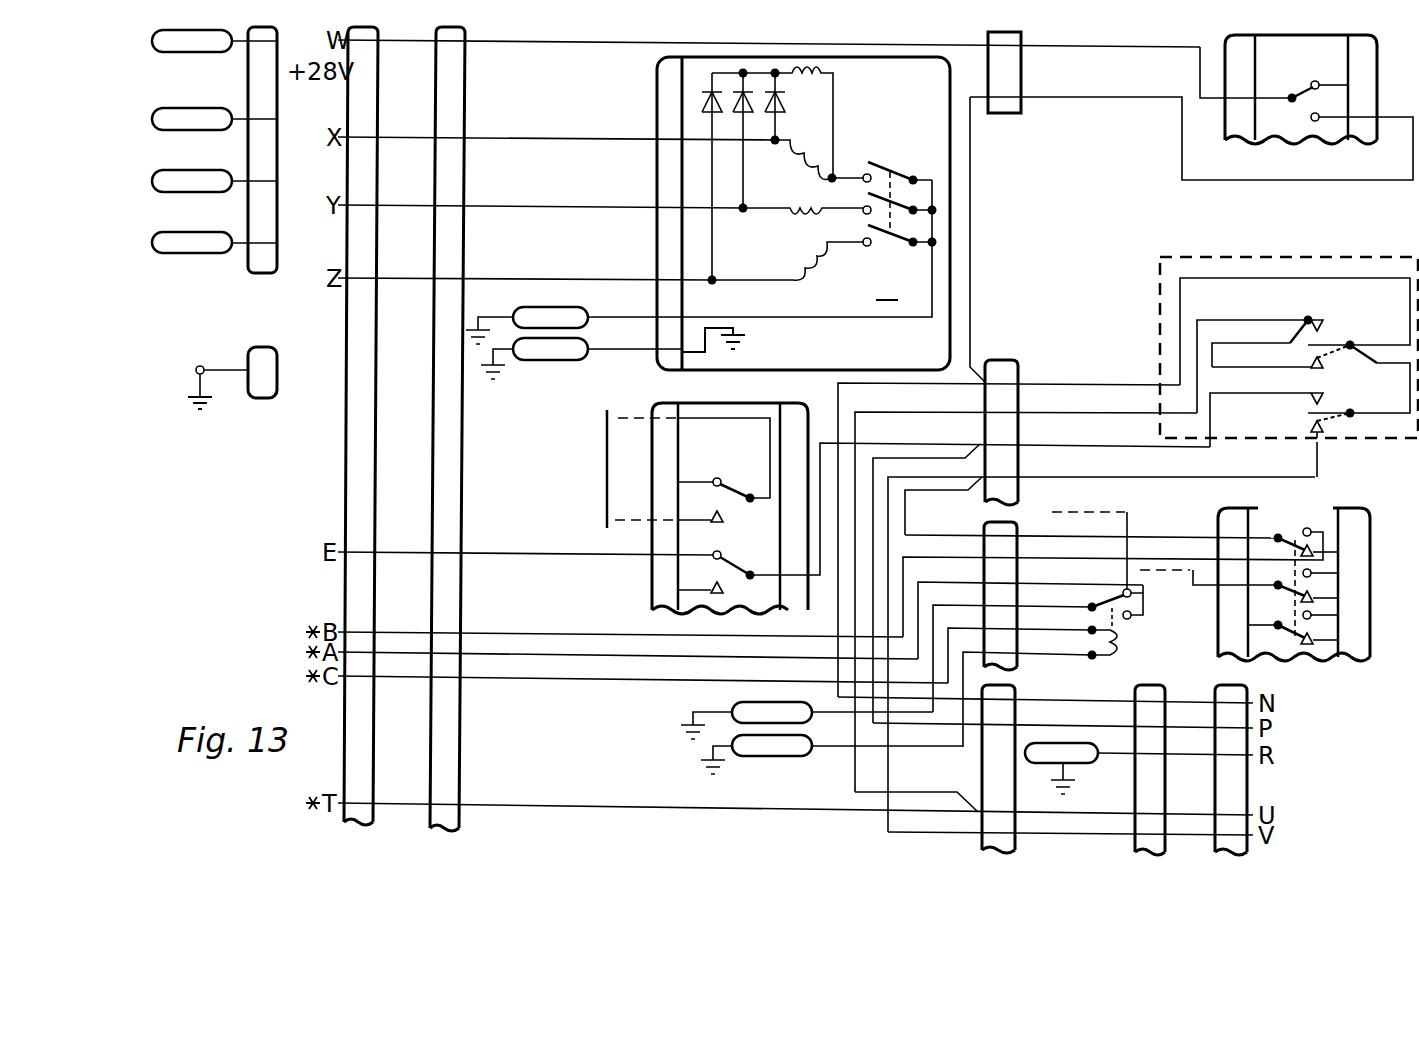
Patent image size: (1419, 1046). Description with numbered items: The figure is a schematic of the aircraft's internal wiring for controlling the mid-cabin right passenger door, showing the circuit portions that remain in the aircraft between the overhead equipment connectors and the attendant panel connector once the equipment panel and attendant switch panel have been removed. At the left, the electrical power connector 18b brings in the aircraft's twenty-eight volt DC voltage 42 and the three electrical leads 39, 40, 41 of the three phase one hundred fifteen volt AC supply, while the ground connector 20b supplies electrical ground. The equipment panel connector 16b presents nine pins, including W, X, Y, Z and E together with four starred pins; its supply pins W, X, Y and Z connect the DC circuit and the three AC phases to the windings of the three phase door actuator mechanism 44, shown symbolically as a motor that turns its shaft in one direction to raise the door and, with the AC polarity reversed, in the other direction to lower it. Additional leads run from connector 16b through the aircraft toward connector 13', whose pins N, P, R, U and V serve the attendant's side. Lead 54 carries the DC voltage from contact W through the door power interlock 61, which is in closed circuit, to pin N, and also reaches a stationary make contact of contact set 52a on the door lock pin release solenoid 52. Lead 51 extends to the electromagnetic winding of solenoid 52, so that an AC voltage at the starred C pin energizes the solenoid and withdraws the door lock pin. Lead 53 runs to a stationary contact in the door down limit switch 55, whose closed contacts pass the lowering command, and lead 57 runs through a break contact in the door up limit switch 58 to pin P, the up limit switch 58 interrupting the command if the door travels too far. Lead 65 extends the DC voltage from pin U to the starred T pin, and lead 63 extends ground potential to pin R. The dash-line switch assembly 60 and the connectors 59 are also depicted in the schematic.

The 28 volt DC voltage 42 is at (207, 53).
The three phase 115 volt AC supply lead 39 is at (192, 108).
The three phase 115 volt AC supply lead 40 is at (192, 170).
The three phase 115 volt AC supply lead 41 is at (192, 232).
The electrical power connector 18b is at (262, 274).
The ground connector 20b is at (262, 347).
The equipment panel connector 16b is at (344, 330).
The connector 59 is at (578, 43).
The door actuator mechanism 44 is at (908, 108).
The door power interlock 61 is at (1378, 80).
The switch assembly 60 is at (1286, 254).
The door up limit switch 58 is at (655, 398).
The lead 57 is at (413, 532).
The lead 53 is at (534, 632).
The lead 54 is at (566, 652).
The lead 51 is at (560, 680).
The lead 65 is at (553, 804).
The door lock pin release solenoid 52 is at (1124, 630).
The contact set 52a is at (1190, 617).
The door down limit switch 55 is at (1366, 498).
The lead 63 is at (1097, 762).
The connector 13' is at (1259, 770).